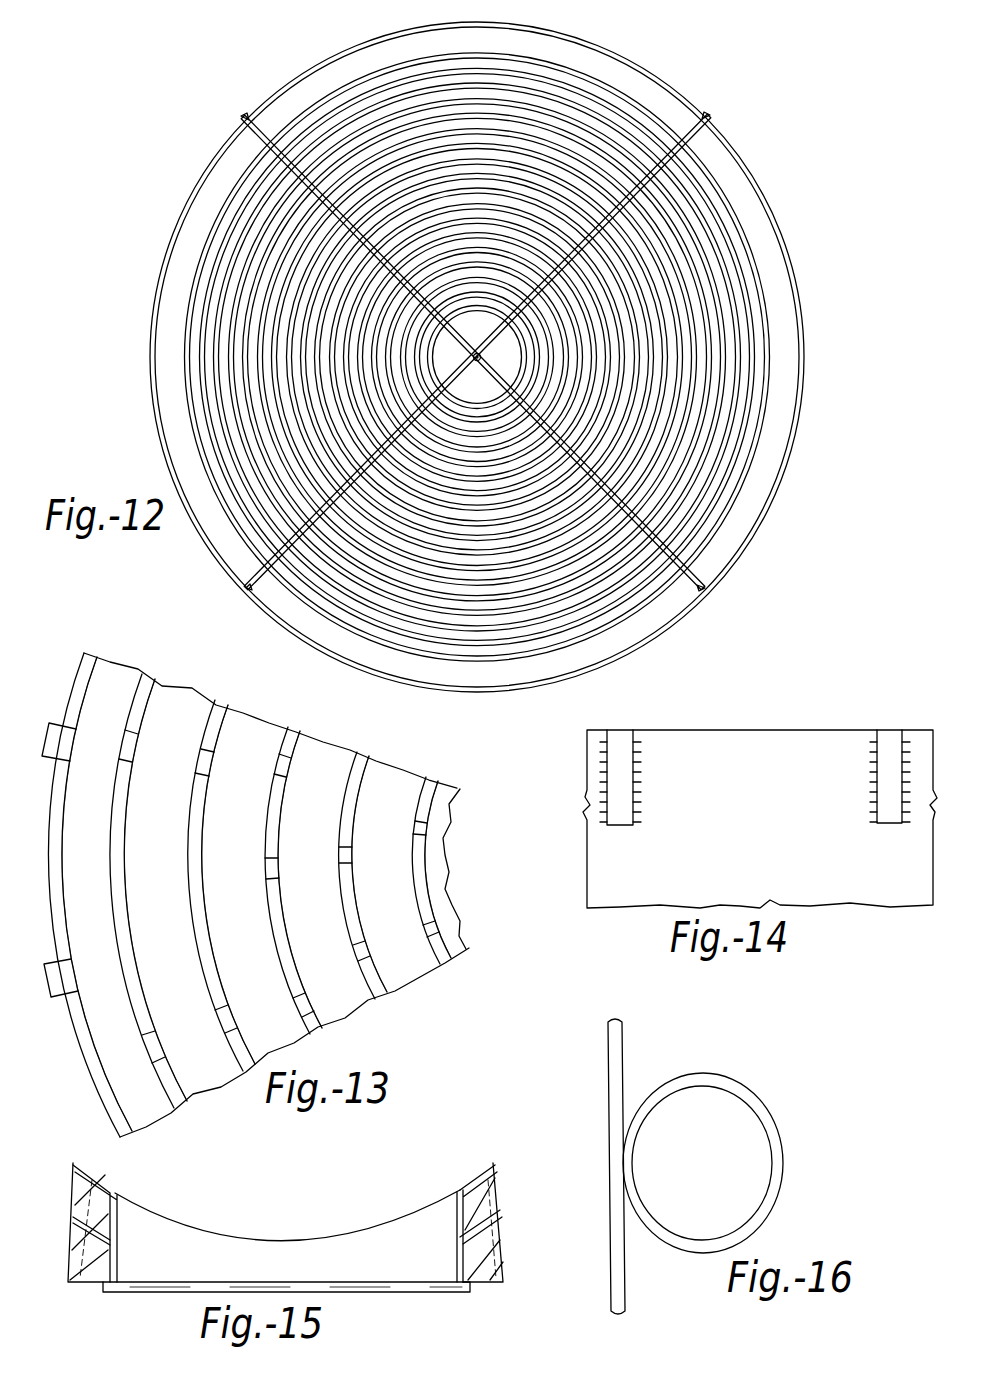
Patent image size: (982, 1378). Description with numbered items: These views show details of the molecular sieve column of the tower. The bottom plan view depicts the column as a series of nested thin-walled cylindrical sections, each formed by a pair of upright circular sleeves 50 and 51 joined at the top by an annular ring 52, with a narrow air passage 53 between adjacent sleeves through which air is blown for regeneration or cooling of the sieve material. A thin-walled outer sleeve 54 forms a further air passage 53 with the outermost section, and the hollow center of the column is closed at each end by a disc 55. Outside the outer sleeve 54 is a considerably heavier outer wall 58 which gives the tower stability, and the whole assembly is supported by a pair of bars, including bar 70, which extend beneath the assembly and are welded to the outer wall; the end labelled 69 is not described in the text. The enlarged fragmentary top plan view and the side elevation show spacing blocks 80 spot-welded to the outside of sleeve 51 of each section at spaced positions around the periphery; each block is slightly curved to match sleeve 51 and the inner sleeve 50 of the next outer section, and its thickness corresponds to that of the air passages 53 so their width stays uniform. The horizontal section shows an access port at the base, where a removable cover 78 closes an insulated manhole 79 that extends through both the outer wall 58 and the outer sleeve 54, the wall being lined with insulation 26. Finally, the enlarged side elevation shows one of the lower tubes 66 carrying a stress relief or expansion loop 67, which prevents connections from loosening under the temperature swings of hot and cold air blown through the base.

In FIG. 15, the insulation 26 is at (500, 1192).
In FIG. 12, the inner upright circular sleeve 50 is at (200, 383).
In FIG. 13, the inner upright circular sleeve 50 is at (114, 822).
In FIG. 12, the outer upright circular sleeve 51 is at (187, 343).
In FIG. 13, the outer upright circular sleeve 51 is at (62, 792).
In FIG. 14, the outer upright circular sleeve 51 is at (780, 797).
In FIG. 12, the annular ring 52 is at (193, 363).
In FIG. 13, the annular ring 52 is at (97, 898).
In FIG. 12, the air passage 53 is at (190, 418).
In FIG. 13, the air passage 53 is at (132, 793).
In FIG. 12, the outer sleeve 54 is at (187, 297).
In FIG. 15, the outer sleeve 54 is at (100, 1193).
In FIG. 12, the disc 55 is at (490, 398).
In FIG. 12, the outer wall 58 is at (178, 226).
In FIG. 16, the tube 66 is at (625, 1283).
In FIG. 16, the expansion loop 67 is at (780, 1168).
In FIG. 12, the cross leg 69 is at (714, 119).
In FIG. 12, the supporting bar 70 is at (262, 120).
In FIG. 15, the cover 78 is at (425, 1290).
In FIG. 15, the insulated manhole 79 is at (275, 1250).
In FIG. 13, the spacing block 80 is at (55, 724).
In FIG. 14, the spacing block 80 is at (646, 712).